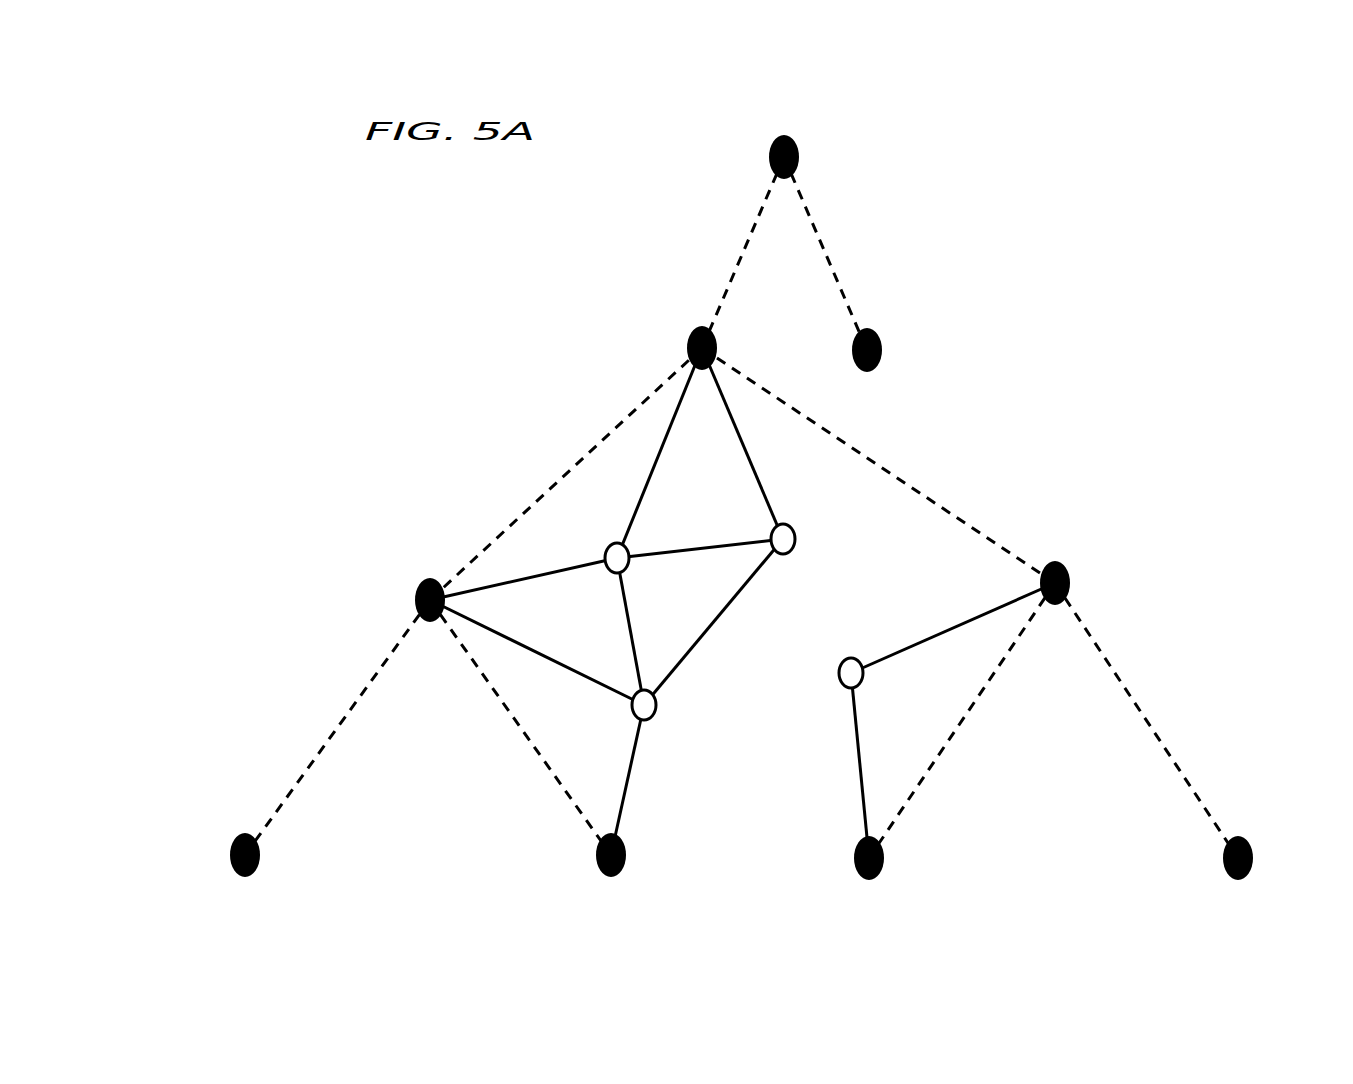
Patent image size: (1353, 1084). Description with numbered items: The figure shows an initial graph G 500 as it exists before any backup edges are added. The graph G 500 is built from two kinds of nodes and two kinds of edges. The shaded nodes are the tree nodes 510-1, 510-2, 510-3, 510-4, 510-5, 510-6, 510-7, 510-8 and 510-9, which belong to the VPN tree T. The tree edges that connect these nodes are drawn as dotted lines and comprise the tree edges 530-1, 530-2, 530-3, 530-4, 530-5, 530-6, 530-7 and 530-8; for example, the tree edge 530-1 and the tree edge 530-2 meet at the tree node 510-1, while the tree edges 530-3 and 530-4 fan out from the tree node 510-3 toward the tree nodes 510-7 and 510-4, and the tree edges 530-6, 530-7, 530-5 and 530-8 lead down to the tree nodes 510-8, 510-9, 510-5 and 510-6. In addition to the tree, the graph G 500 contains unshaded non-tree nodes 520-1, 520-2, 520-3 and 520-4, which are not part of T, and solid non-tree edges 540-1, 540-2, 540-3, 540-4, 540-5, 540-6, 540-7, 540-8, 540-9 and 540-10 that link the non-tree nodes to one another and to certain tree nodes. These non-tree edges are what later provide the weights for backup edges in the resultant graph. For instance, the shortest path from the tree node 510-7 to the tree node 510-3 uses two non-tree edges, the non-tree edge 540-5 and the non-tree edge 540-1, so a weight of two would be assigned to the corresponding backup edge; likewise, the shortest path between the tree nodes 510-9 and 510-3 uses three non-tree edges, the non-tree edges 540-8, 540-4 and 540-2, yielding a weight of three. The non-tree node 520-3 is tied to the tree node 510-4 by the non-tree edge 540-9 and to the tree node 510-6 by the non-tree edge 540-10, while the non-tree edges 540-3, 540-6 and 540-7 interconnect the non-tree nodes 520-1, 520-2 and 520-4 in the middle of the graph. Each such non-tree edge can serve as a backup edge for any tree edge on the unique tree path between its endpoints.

The graph G 500 is at (1014, 191).
The tree node 510-1 is at (798, 148).
The tree node 510-2 is at (881, 352).
The tree node 510-3 is at (692, 335).
The tree node 510-4 is at (1067, 572).
The tree node 510-5 is at (1223, 862).
The tree node 510-6 is at (854, 862).
The tree node 510-7 is at (420, 583).
The tree node 510-8 is at (234, 840).
The tree node 510-9 is at (598, 865).
The non-tree node 520-1 is at (797, 541).
The non-tree node 520-2 is at (609, 550).
The non-tree node 520-3 is at (838, 675).
The non-tree node 520-4 is at (658, 705).
The tree edge 530-1 is at (824, 245).
The tree edge 530-2 is at (740, 264).
The tree edge 530-3 is at (620, 423).
The tree edge 530-4 is at (830, 432).
The tree edge 530-5 is at (1169, 751).
The tree edge 530-6 is at (343, 720).
The tree edge 530-7 is at (525, 735).
The tree edge 530-8 is at (943, 752).
The non-tree edge 540-1 is at (675, 418).
The non-tree edge 540-2 is at (755, 479).
The non-tree edge 540-3 is at (660, 552).
The non-tree edge 540-4 is at (753, 577).
The non-tree edge 540-5 is at (514, 583).
The non-tree edge 540-6 is at (539, 653).
The non-tree edge 540-7 is at (628, 610).
The non-tree edge 540-8 is at (628, 787).
The non-tree edge 540-9 is at (944, 631).
The non-tree edge 540-10 is at (856, 750).